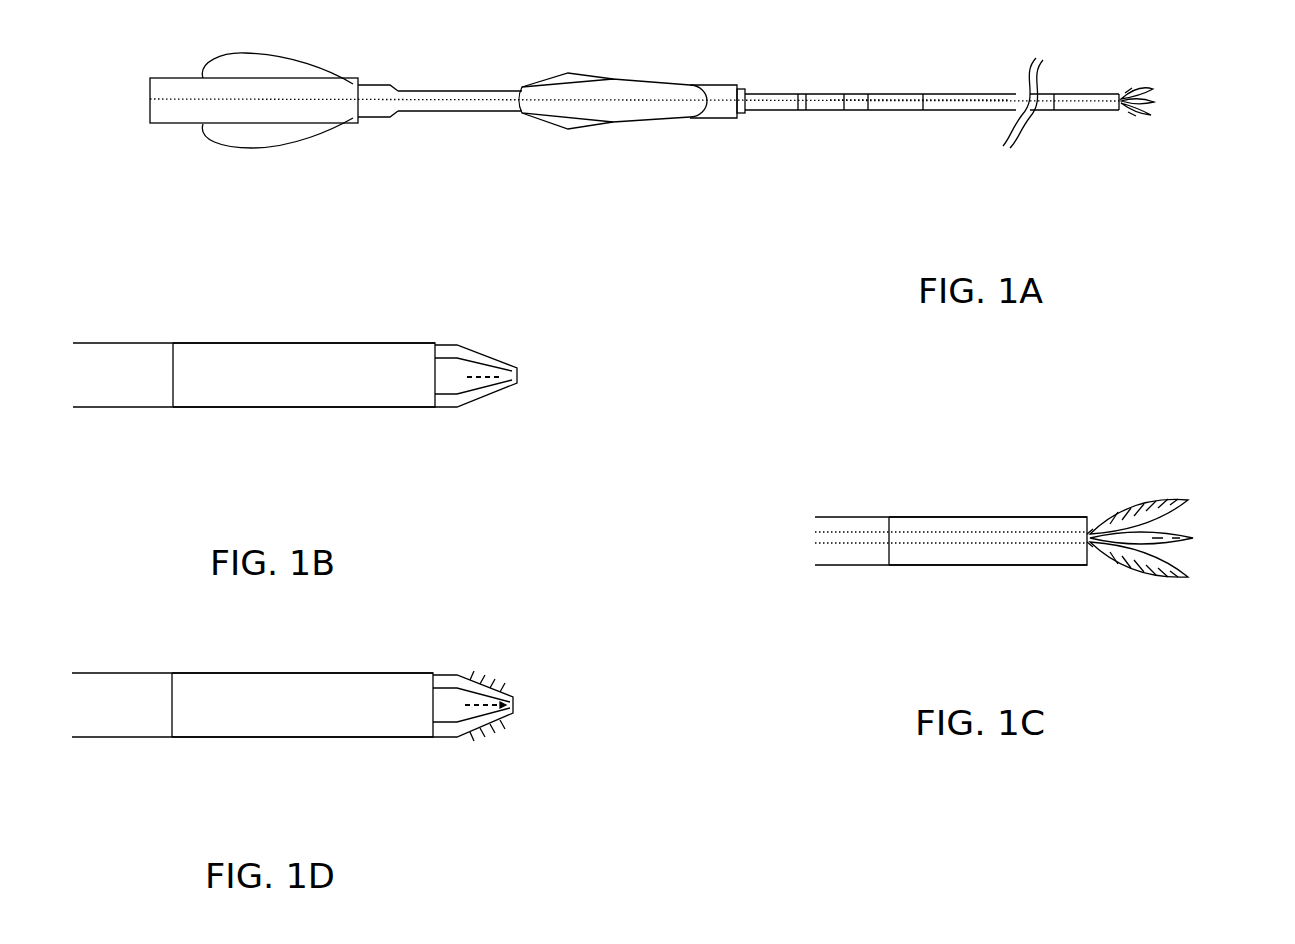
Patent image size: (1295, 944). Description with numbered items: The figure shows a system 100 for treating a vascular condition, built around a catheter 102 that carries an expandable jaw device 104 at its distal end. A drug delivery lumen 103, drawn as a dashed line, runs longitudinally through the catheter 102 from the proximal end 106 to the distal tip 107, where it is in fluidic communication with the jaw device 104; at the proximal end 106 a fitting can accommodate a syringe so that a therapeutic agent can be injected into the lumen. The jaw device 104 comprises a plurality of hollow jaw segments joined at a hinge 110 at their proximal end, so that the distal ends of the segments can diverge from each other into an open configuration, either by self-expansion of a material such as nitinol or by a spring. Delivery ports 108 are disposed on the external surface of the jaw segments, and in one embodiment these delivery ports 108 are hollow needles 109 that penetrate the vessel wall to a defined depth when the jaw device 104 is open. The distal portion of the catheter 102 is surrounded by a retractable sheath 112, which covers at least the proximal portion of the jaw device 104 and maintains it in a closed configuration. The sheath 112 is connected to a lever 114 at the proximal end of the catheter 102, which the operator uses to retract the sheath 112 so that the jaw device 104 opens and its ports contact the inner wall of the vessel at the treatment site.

In FIG. 1A, the system 100 is at (1270, 90).
In FIG. 1A, the catheter 102 is at (827, 116).
In FIG. 1B, the catheter 102 is at (125, 408).
In FIG. 1D, the catheter 102 is at (125, 738).
In FIG. 1C, the catheter 102 is at (840, 566).
In FIG. 1A, the drug delivery lumen 103 is at (943, 100).
In FIG. 1C, the drug delivery lumen 103 is at (958, 537).
In FIG. 1A, the expandable jaw device 104 is at (1147, 118).
In FIG. 1B, the expandable jaw device 104 is at (460, 343).
In FIG. 1D, the expandable jaw device 104 is at (457, 673).
In FIG. 1C, the expandable jaw device 104 is at (1140, 578).
In FIG. 1A, the proximal end 106 is at (147, 102).
In FIG. 1A, the distal tip 107 is at (1122, 88).
In FIG. 1C, the distal tip 107 is at (1092, 520).
In FIG. 1B, the delivery ports 108 is at (483, 400).
In FIG. 1D, the delivery ports 108 is at (516, 704).
In FIG. 1D, the hollow needles 109 is at (502, 682).
In FIG. 1A, the hinge 110 is at (1121, 113).
In FIG. 1B, the retractable sheath 112 is at (293, 408).
In FIG. 1D, the retractable sheath 112 is at (293, 738).
In FIG. 1C, the retractable sheath 112 is at (975, 566).
In FIG. 1A, the lever 114 is at (270, 148).